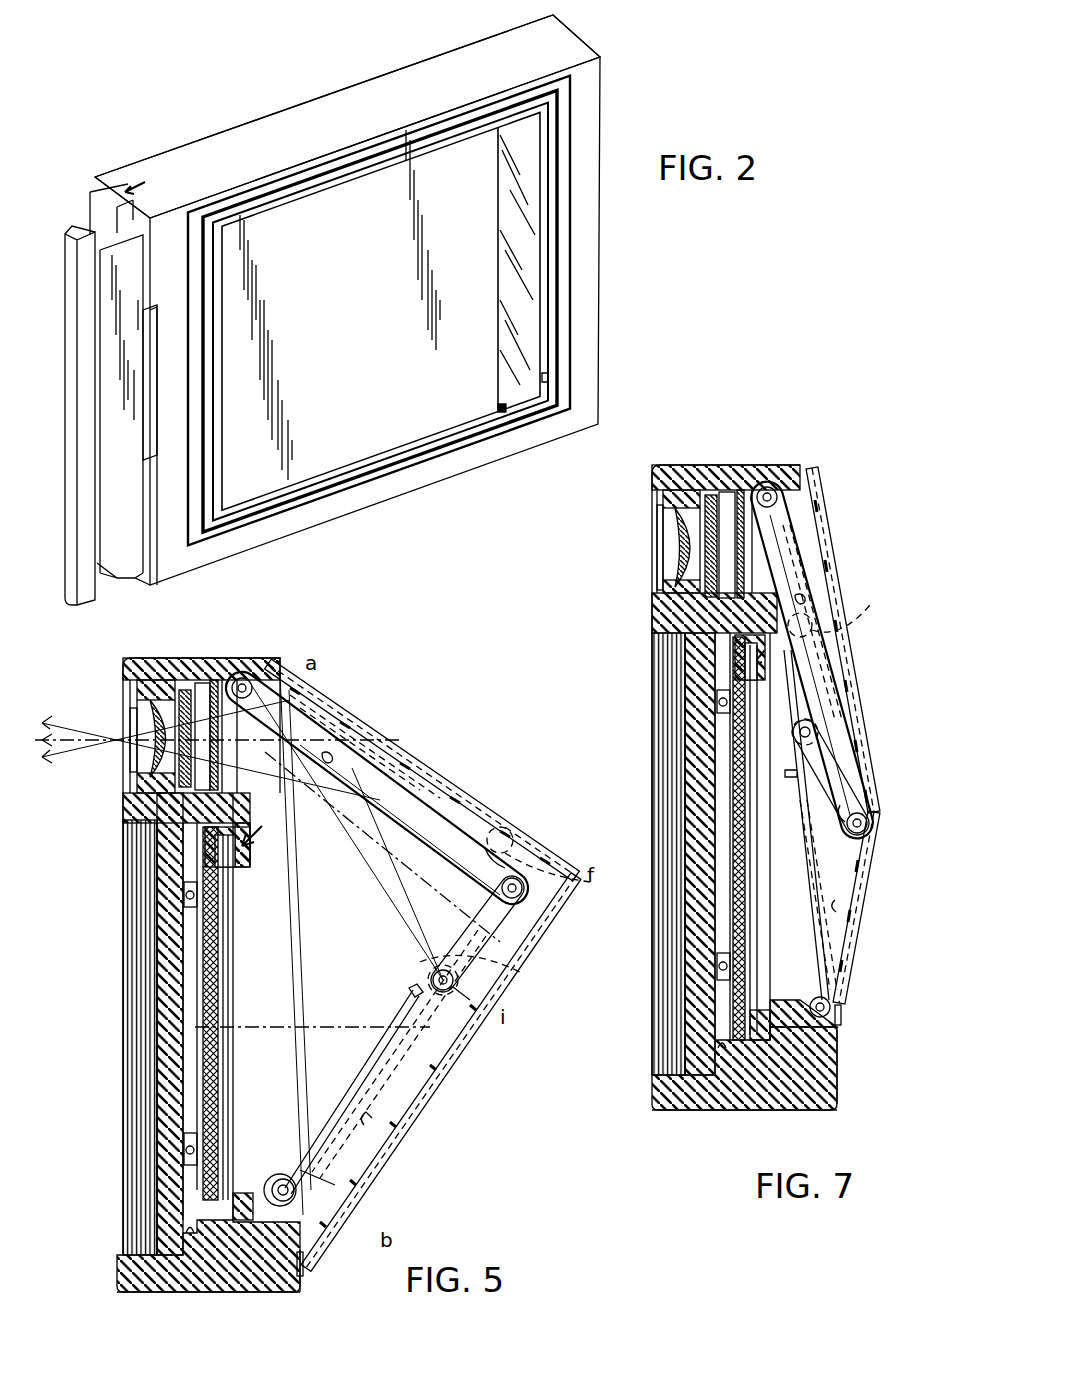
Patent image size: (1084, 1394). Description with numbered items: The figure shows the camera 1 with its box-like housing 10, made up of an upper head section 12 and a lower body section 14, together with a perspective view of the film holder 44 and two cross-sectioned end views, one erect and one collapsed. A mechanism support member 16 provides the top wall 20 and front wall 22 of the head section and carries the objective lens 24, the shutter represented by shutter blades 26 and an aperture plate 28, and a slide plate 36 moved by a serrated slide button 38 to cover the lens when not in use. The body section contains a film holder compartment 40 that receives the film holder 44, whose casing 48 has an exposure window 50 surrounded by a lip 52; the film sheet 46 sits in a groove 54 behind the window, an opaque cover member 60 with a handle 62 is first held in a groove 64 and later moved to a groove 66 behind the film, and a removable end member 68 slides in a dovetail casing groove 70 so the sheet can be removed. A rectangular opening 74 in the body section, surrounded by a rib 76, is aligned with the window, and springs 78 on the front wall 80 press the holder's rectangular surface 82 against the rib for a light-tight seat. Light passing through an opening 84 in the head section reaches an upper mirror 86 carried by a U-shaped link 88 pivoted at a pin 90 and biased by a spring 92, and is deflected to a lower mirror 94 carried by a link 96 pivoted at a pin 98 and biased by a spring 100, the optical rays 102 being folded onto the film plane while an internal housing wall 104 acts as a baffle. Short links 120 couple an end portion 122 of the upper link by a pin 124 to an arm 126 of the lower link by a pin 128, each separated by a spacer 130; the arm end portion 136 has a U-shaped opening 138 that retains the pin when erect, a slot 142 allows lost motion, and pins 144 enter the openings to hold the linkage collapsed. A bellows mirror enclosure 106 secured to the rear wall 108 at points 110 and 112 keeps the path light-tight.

In FIG. 5, the camera 1 is at (280, 1298).
In FIG. 7, the camera 1 is at (634, 1101).
In FIG. 5, the housing 10 is at (127, 1296).
In FIG. 7, the housing 10 is at (826, 1110).
In FIG. 5, the head section 12 is at (200, 682).
In FIG. 7, the head section 12 is at (727, 490).
In FIG. 5, the body section 14 is at (125, 1212).
In FIG. 7, the body section 14 is at (658, 980).
In FIG. 5, the mechanism support member 16 is at (230, 680).
In FIG. 7, the mechanism support member 16 is at (758, 470).
In FIG. 5, the top wall 20 is at (138, 660).
In FIG. 7, the top wall 20 is at (684, 465).
In FIG. 5, the front wall 22 is at (122, 672).
In FIG. 7, the front wall 22 is at (650, 488).
In FIG. 5, the objective lens 24 is at (137, 698).
In FIG. 7, the objective lens 24 is at (663, 520).
In FIG. 5, the shutter blades 26 is at (184, 690).
In FIG. 7, the shutter blades 26 is at (710, 495).
In FIG. 5, the aperture plate 28 is at (214, 680).
In FIG. 7, the aperture plate 28 is at (741, 490).
In FIG. 5, the slide plate 36 is at (150, 777).
In FIG. 7, the slide plate 36 is at (672, 560).
In FIG. 5, the slide button 38 is at (128, 715).
In FIG. 7, the slide button 38 is at (655, 532).
In FIG. 5, the film holder compartment 40 is at (185, 1240).
In FIG. 7, the film holder compartment 40 is at (720, 1050).
In FIG. 2, the film holder 44 is at (400, 62).
In FIG. 5, the film holder 44 is at (200, 1002).
In FIG. 7, the film holder 44 is at (733, 836).
In FIG. 2, the film sheet 46 is at (525, 302).
In FIG. 5, the film sheet 46 is at (228, 1015).
In FIG. 7, the film sheet 46 is at (750, 785).
In FIG. 2, the casing 48 is at (318, 104).
In FIG. 5, the casing 48 is at (185, 1222).
In FIG. 7, the casing 48 is at (720, 1045).
In FIG. 2, the exposure window 50 is at (550, 384).
In FIG. 5, the exposure window 50 is at (240, 1192).
In FIG. 7, the exposure window 50 is at (765, 1008).
In FIG. 2, the lip 52 is at (530, 413).
In FIG. 5, the groove 54 is at (183, 836).
In FIG. 7, the groove 54 is at (715, 640).
In FIG. 2, the cover member 60 is at (352, 272).
In FIG. 5, the cover member 60 is at (218, 958).
In FIG. 7, the cover member 60 is at (760, 928).
In FIG. 2, the handle 62 is at (68, 338).
In FIG. 2, the groove 64 is at (508, 402).
In FIG. 5, the groove 64 is at (240, 822).
In FIG. 7, the groove 64 is at (680, 612).
In FIG. 5, the groove 66 is at (197, 868).
In FIG. 7, the groove 66 is at (730, 660).
In FIG. 2, the end member 68 is at (92, 203).
In FIG. 2, the casing groove 70 is at (145, 182).
In FIG. 5, the rectangular opening 74 is at (245, 877).
In FIG. 7, the rectangular opening 74 is at (780, 690).
In FIG. 5, the rib 76 is at (268, 828).
In FIG. 7, the rib 76 is at (780, 660).
In FIG. 5, the springs 78 is at (184, 893).
In FIG. 7, the springs 78 is at (717, 702).
In FIG. 5, the front wall 80 is at (150, 920).
In FIG. 7, the front wall 80 is at (690, 750).
In FIG. 2, the rectangular surface 82 is at (300, 500).
In FIG. 5, the rectangular surface 82 is at (250, 845).
In FIG. 7, the rectangular surface 82 is at (765, 660).
In FIG. 5, the opening 84 is at (236, 752).
In FIG. 7, the opening 84 is at (775, 605).
In FIG. 5, the upper mirror 86 is at (300, 700).
In FIG. 7, the upper mirror 86 is at (795, 512).
In FIG. 5, the link 88 is at (420, 805).
In FIG. 7, the link 88 is at (790, 528).
In FIG. 5, the pin 90 is at (248, 680).
In FIG. 7, the pin 90 is at (772, 487).
In FIG. 5, the spring 92 is at (345, 713).
In FIG. 7, the spring 92 is at (818, 480).
In FIG. 5, the lower mirror 94 is at (370, 1125).
In FIG. 7, the lower mirror 94 is at (840, 910).
In FIG. 5, the link 96 is at (410, 1080).
In FIG. 7, the link 96 is at (815, 880).
In FIG. 5, the pin 98 is at (320, 1212).
In FIG. 7, the pin 98 is at (832, 1012).
In FIG. 5, the spring 100 is at (408, 993).
In FIG. 7, the spring 100 is at (830, 1020).
In FIG. 5, the optical rays 102 is at (36, 760).
In FIG. 5, the internal housing wall 104 is at (255, 858).
In FIG. 5, the mirror enclosure 106 is at (365, 722).
In FIG. 7, the mirror enclosure 106 is at (860, 742).
In FIG. 5, the rear wall 108 is at (305, 1280).
In FIG. 7, the rear wall 108 is at (840, 1090).
In FIG. 5, the securing point 110 is at (276, 664).
In FIG. 7, the securing point 110 is at (812, 468).
In FIG. 5, the securing point 112 is at (305, 1262).
In FIG. 7, the securing point 112 is at (842, 1060).
In FIG. 5, the link 120 is at (478, 930).
In FIG. 7, the link 120 is at (830, 775).
In FIG. 5, the end portion 122 is at (495, 850).
In FIG. 7, the end portion 122 is at (852, 800).
In FIG. 5, the pin 124 is at (520, 878).
In FIG. 7, the pin 124 is at (868, 823).
In FIG. 5, the arm 126 is at (408, 1040).
In FIG. 7, the arm 126 is at (810, 835).
In FIG. 5, the pin 128 is at (480, 999).
In FIG. 5, the spacer 130 is at (505, 968).
In FIG. 5, the end portion 136 is at (495, 828).
In FIG. 7, the end portion 136 is at (812, 618).
In FIG. 5, the opening 138 is at (572, 898).
In FIG. 7, the opening 138 is at (858, 607).
In FIG. 5, the slot 142 is at (425, 975).
In FIG. 7, the slot 142 is at (820, 728).
In FIG. 5, the pins 144 is at (332, 758).
In FIG. 7, the pins 144 is at (810, 640).